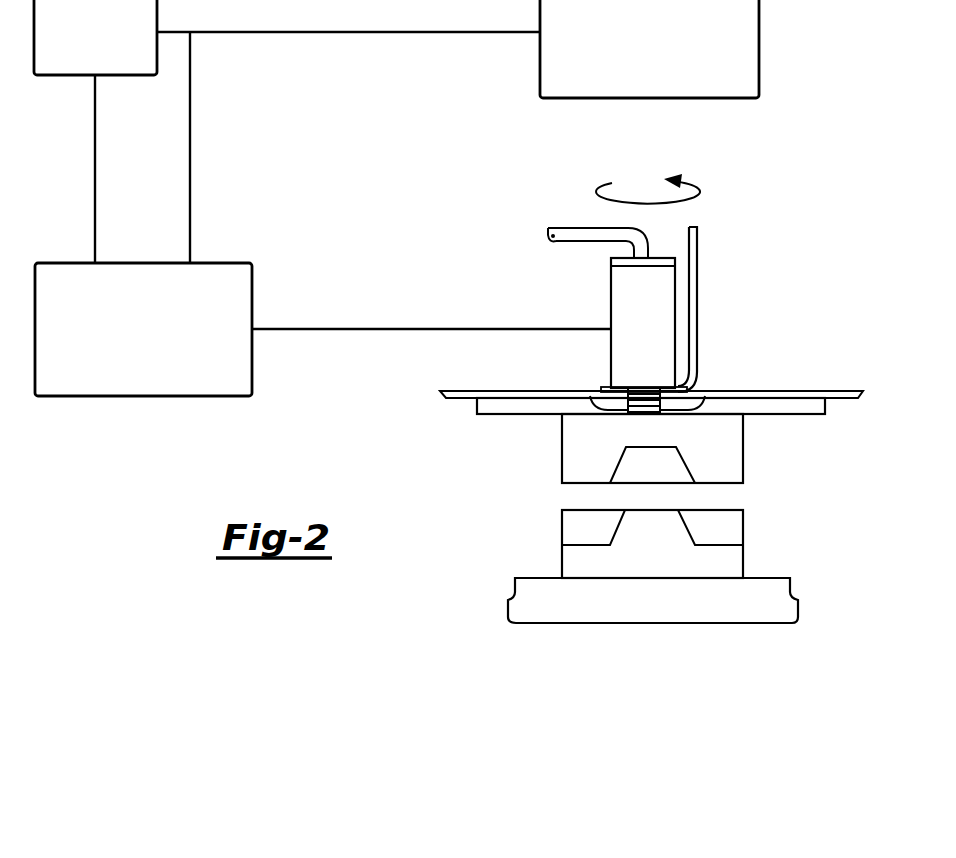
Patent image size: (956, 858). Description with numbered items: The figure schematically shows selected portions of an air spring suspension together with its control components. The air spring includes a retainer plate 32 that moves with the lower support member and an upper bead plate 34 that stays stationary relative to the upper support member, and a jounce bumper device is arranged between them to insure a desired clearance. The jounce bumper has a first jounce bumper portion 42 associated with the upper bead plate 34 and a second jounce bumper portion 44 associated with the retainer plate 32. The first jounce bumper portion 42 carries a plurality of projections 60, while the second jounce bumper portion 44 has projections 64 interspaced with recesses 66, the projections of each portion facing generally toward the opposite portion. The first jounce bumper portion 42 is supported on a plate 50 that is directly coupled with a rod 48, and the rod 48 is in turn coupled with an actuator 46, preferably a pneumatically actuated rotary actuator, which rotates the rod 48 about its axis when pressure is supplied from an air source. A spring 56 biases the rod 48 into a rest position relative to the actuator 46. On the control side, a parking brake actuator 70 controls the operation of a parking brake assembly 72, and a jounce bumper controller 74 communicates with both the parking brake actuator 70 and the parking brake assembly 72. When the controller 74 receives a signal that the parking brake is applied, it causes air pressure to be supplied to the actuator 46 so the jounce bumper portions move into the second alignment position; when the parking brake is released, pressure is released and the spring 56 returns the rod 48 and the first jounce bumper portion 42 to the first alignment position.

The retainer plate 32 is at (790, 605).
The upper bead plate 34 is at (839, 390).
The first jounce bumper portion 42 is at (645, 450).
The second jounce bumper portion 44 is at (649, 530).
The actuator 46 is at (627, 293).
The rod 48 is at (695, 402).
The plate 50 is at (828, 406).
The spring 56 is at (592, 394).
The projections 60 is at (745, 460).
The projections 64 is at (638, 514).
The recesses 66 is at (733, 545).
The parking brake actuator 70 is at (106, 45).
The parking brake assembly 72 is at (662, 39).
The jounce bumper controller 74 is at (148, 348).